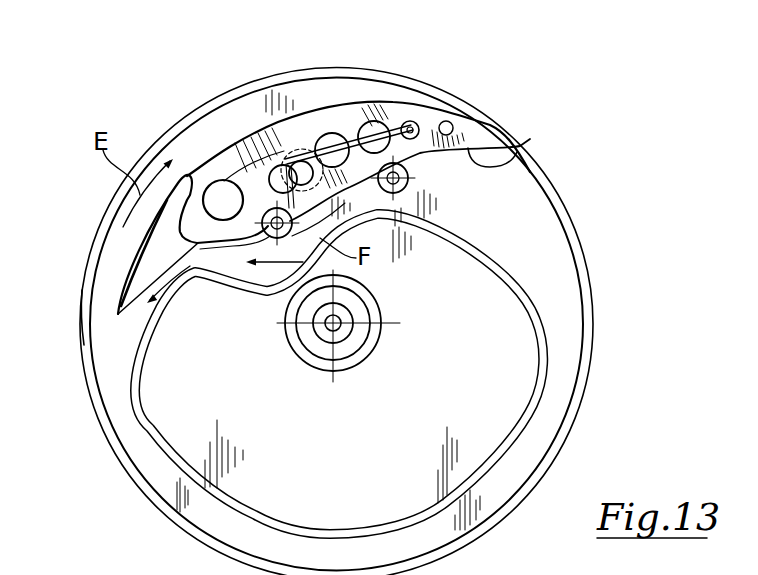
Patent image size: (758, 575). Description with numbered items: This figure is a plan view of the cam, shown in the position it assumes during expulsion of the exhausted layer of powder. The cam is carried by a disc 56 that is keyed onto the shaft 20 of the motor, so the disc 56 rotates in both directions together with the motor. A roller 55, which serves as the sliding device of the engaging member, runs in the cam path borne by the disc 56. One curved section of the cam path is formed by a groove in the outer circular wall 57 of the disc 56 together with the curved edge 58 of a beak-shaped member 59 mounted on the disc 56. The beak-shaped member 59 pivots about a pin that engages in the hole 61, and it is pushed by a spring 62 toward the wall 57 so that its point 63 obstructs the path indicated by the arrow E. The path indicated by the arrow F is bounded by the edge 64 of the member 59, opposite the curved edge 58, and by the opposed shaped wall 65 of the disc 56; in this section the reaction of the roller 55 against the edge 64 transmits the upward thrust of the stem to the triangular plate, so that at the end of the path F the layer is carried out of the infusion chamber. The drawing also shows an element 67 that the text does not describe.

The shaft 20 is at (340, 333).
The roller 55 is at (423, 137).
The disc 56 is at (577, 222).
The outer circular wall 57 is at (82, 319).
The curved edge 58 is at (348, 108).
The beak-shaped member 59 is at (328, 125).
The hole 61 is at (237, 187).
The spring 62 is at (282, 160).
The point 63 is at (474, 129).
The edge 64 is at (515, 156).
The shaped wall 65 is at (259, 277).
The spring tongue 67 is at (160, 272).